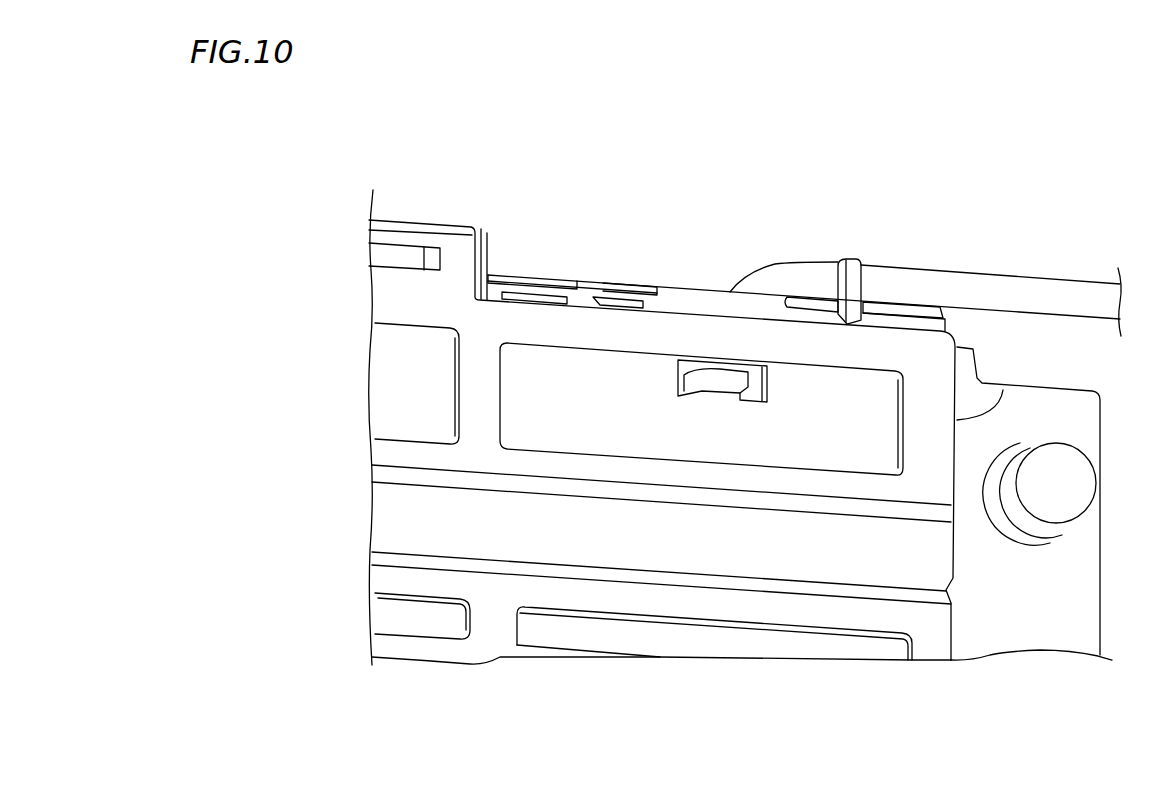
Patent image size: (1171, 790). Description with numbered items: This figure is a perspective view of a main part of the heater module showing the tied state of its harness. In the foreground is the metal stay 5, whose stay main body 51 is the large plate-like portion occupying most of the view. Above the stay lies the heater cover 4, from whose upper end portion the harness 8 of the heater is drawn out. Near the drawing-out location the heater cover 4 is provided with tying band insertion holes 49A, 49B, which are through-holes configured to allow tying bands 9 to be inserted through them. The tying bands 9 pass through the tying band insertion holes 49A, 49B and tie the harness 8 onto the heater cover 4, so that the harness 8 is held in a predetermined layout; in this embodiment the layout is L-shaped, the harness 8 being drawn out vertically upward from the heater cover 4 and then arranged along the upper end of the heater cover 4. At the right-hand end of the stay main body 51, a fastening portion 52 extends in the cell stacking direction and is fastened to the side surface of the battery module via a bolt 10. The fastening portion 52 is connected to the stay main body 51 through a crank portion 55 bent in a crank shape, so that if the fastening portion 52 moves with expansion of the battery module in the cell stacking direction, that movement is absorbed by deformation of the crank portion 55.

The heater cover 4 is at (665, 291).
The metal stay 5 is at (832, 548).
The stay main body 51 is at (662, 450).
The harness 8 is at (992, 290).
The tying band 9 is at (725, 372).
The bolt 10 is at (1080, 487).
The tying band insertion hole 49A is at (690, 376).
The tying band insertion hole 49B is at (866, 300).
The fastening portion 52 is at (1050, 501).
The crank portion 55 is at (1003, 393).